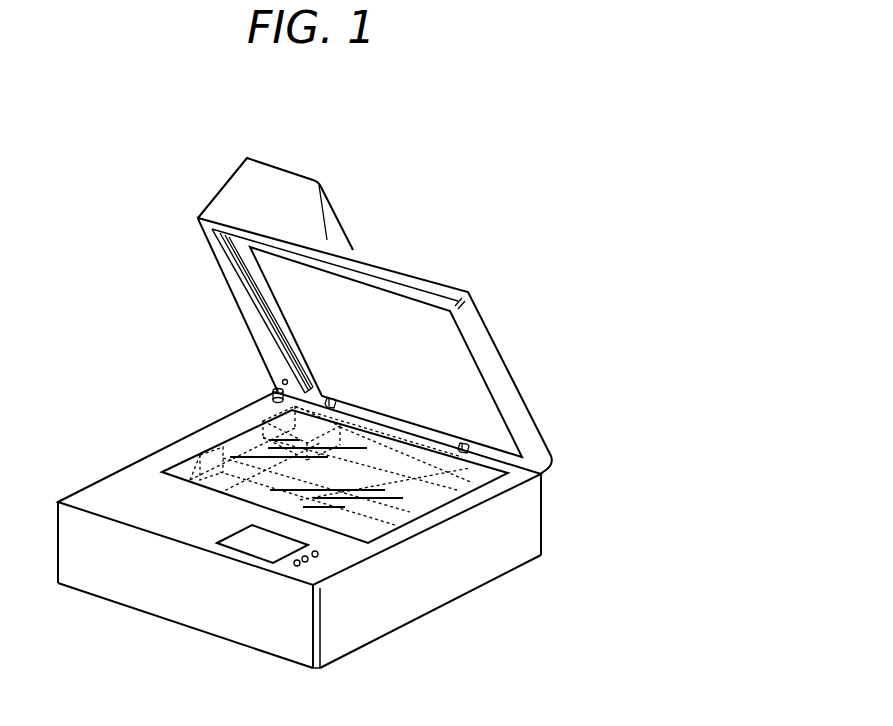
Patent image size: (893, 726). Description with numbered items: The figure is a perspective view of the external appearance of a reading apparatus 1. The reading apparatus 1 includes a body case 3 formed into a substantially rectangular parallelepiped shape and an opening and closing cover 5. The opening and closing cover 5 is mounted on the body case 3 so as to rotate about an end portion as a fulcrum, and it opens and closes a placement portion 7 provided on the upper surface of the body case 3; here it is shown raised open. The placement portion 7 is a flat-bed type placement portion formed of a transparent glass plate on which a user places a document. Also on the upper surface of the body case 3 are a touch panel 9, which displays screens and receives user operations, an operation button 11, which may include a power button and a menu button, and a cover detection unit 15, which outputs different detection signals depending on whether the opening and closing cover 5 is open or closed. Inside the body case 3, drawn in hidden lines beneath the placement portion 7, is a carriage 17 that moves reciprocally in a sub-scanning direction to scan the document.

The reading apparatus 1 is at (394, 101).
The body case 3 is at (473, 577).
The opening and closing cover 5 is at (508, 368).
The placement portion 7 is at (223, 440).
The touch panel 9 is at (240, 552).
The operation button 11 is at (293, 565).
The cover detection unit 15 is at (274, 392).
The carriage 17 is at (190, 462).